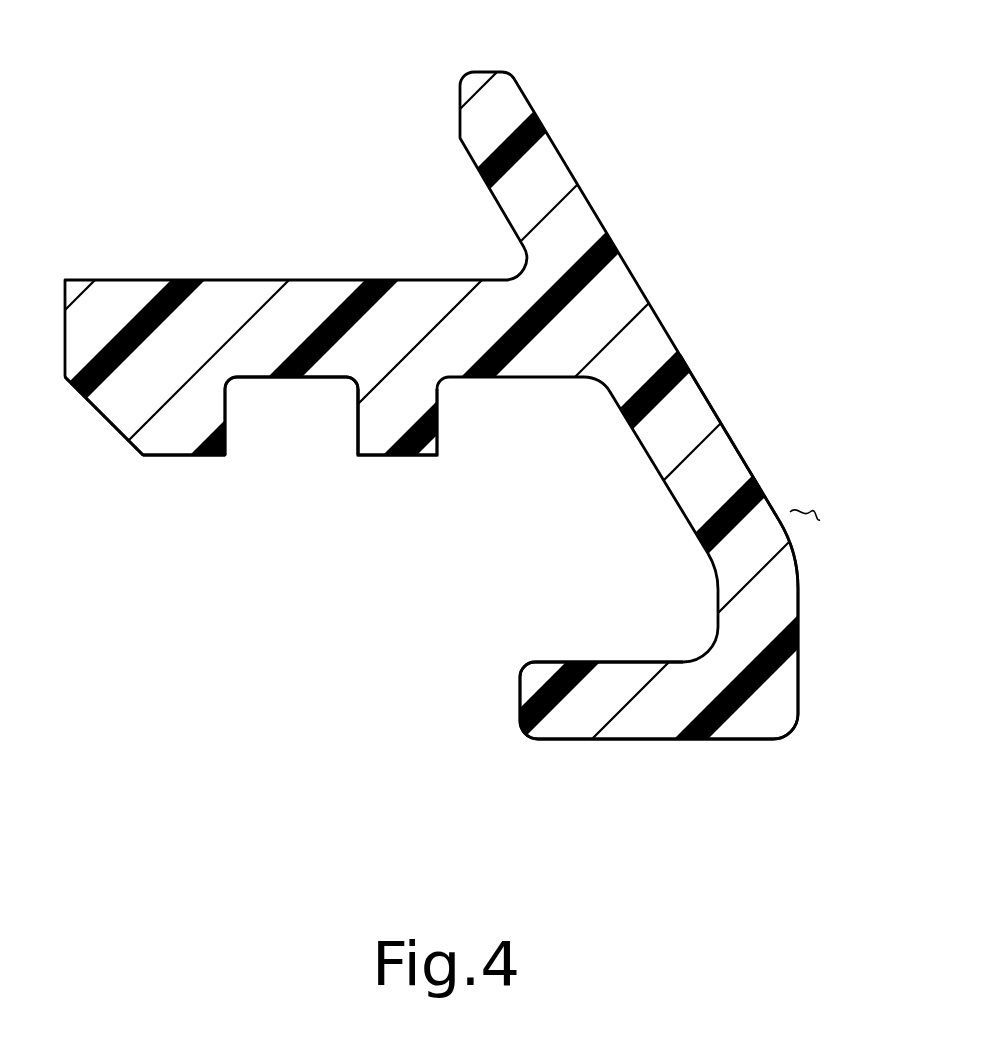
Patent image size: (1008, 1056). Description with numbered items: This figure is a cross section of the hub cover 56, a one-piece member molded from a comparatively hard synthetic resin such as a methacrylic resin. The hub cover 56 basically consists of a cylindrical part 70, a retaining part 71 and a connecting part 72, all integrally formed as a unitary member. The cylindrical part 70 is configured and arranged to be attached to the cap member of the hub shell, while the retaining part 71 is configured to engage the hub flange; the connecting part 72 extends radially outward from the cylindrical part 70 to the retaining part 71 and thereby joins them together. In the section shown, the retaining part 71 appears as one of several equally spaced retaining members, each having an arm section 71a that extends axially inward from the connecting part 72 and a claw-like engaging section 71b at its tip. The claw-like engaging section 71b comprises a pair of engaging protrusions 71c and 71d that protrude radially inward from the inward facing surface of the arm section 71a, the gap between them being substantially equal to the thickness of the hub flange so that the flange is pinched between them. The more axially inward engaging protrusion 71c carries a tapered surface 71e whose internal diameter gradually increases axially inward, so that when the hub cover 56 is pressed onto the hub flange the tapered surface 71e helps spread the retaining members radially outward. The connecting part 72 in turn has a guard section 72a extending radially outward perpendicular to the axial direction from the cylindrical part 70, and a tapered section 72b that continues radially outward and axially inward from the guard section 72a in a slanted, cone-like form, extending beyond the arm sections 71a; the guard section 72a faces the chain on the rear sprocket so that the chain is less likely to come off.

The hub cover 56 is at (766, 371).
The cylindrical part 70 is at (620, 730).
The retaining part 71 is at (301, 290).
The arm section 71a is at (413, 300).
The claw-like engaging section 71b is at (212, 486).
The engaging protrusion 71c is at (158, 443).
The engaging protrusion 71d is at (410, 450).
The tapered surface 71e is at (103, 414).
The connecting part 72 is at (640, 304).
The guard section 72a is at (788, 592).
The tapered section 72b is at (737, 468).